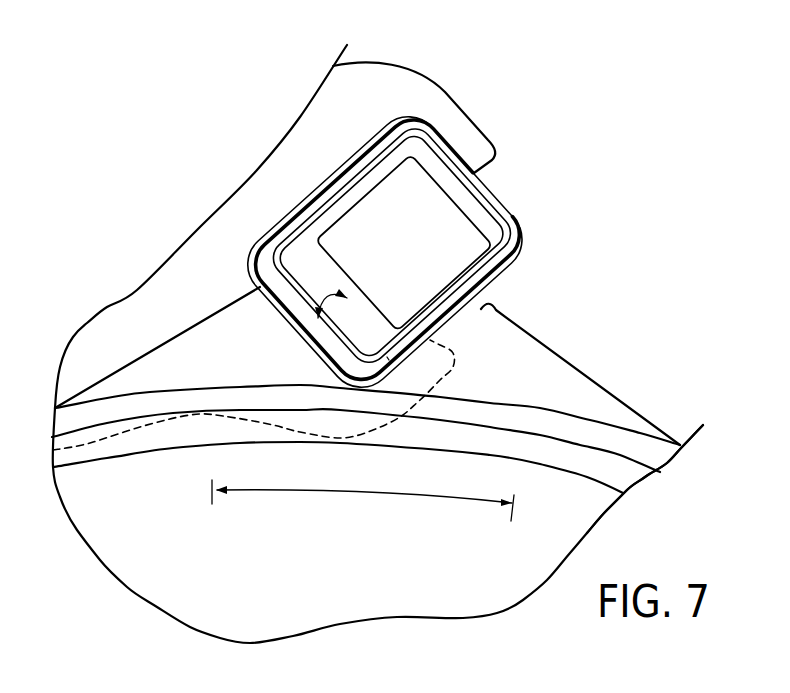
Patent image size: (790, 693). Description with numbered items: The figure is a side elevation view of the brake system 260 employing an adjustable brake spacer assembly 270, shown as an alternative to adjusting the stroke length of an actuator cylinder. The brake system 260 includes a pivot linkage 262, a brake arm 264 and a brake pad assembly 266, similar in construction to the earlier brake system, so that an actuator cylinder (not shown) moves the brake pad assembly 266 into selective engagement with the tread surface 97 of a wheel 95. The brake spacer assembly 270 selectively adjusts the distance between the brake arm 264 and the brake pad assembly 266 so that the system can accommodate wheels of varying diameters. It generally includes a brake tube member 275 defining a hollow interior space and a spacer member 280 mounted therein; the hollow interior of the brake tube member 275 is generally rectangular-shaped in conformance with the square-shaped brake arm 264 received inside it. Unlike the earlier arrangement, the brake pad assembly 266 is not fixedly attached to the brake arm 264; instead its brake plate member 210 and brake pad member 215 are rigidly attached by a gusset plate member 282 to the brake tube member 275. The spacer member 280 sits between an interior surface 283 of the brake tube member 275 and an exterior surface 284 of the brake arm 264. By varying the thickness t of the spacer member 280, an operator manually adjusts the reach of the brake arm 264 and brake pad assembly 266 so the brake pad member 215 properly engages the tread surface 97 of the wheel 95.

The brake system 260 is at (519, 177).
The pivot linkage 262 is at (471, 111).
The brake arm 264 is at (483, 227).
The brake tube member 275 is at (513, 272).
The interior surface 283 is at (297, 290).
The exterior surface 284 is at (310, 318).
The gusset plate member 282 is at (162, 343).
The thickness t is at (348, 310).
The wheel 95 is at (468, 478).
The brake plate member 210 is at (538, 410).
The brake pad member 215 is at (547, 463).
The tread surface 97 is at (552, 505).
The brake pad assembly 266 is at (684, 446).
The brake spacer assembly 270 is at (313, 367).
The spacer member 280 is at (387, 357).